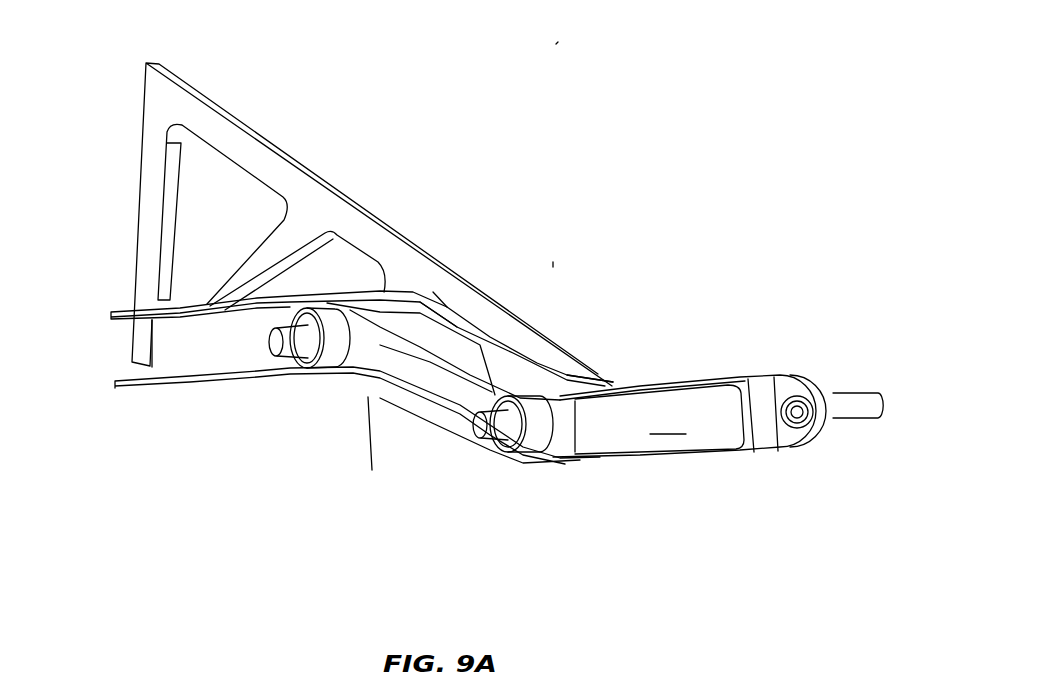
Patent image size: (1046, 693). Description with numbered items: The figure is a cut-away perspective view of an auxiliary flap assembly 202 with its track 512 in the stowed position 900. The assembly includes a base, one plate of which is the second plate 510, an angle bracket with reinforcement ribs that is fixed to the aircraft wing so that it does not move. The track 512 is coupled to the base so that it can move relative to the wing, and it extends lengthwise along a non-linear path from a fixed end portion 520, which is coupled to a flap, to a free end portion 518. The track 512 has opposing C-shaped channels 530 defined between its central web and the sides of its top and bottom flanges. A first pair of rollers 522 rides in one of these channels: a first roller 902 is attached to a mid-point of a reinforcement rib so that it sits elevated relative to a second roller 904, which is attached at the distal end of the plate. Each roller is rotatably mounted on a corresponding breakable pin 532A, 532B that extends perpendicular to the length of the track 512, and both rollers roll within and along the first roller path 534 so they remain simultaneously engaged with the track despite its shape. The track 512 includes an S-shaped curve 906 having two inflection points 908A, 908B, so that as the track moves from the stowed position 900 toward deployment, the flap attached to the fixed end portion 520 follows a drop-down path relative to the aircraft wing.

The auxiliary flap assembly 202 is at (555, 45).
The stowed position 900 is at (553, 268).
The second plate 510 is at (175, 108).
The free end portion 518 is at (116, 313).
The first roller 902 is at (327, 313).
The second roller 904 is at (568, 438).
The first roller path 534 is at (450, 380).
The S-shaped curve 906 is at (565, 334).
The track 512 is at (689, 382).
The fixed end portion 520 is at (787, 389).
The C-shaped channels 530 is at (668, 422).
The breakable pin 532A is at (270, 343).
The breakable pin 532B is at (527, 448).
The inflection point 908A is at (308, 368).
The inflection point 908B is at (544, 466).
The first pair of rollers 522 is at (477, 450).